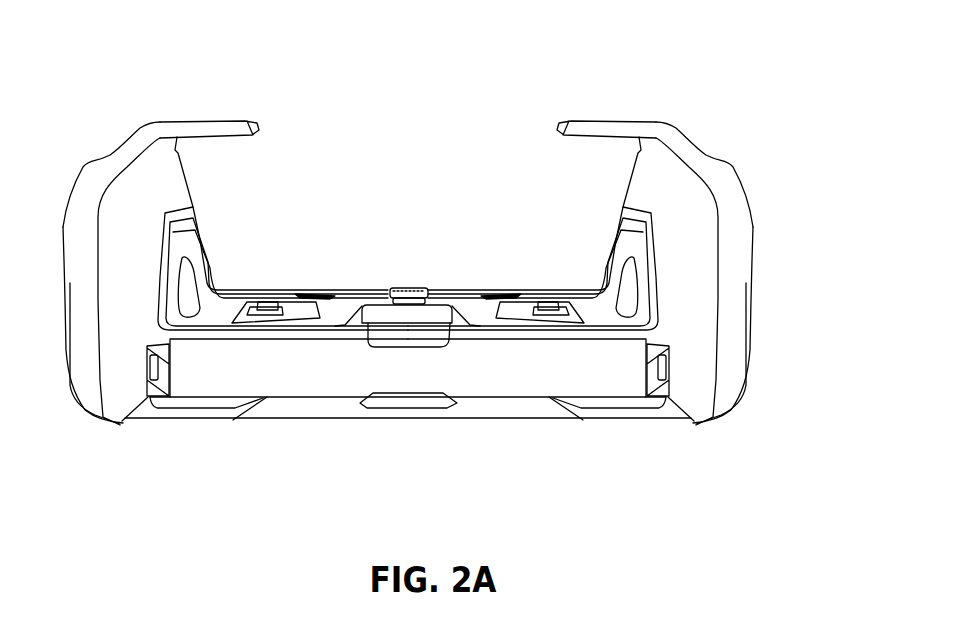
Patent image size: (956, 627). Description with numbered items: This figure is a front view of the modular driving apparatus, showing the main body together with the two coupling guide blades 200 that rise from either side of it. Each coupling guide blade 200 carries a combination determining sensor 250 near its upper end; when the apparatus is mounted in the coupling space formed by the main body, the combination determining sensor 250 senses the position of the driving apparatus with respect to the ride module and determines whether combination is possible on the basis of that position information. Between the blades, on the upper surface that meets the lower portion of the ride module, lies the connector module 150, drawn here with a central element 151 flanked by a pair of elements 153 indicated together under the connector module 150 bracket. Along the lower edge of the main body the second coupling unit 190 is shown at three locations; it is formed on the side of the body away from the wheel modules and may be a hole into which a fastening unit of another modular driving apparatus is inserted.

The connector module 150 is at (542, 163).
The sensor 151 is at (408, 288).
The side sensor 153 is at (268, 302).
The second coupling unit 190 is at (195, 400).
The coupling guide blade 200 is at (725, 188).
The combination determining sensor 250 is at (207, 121).